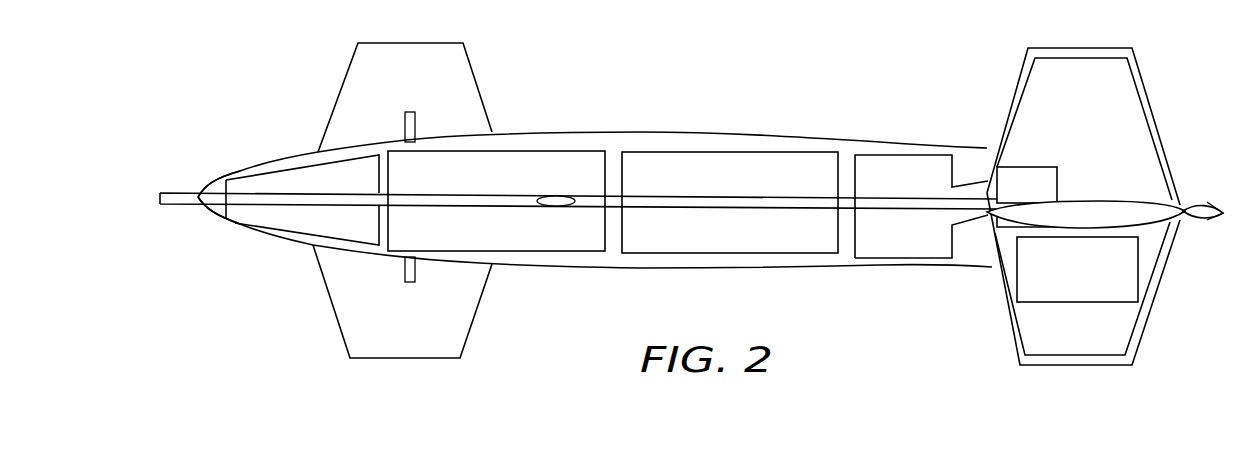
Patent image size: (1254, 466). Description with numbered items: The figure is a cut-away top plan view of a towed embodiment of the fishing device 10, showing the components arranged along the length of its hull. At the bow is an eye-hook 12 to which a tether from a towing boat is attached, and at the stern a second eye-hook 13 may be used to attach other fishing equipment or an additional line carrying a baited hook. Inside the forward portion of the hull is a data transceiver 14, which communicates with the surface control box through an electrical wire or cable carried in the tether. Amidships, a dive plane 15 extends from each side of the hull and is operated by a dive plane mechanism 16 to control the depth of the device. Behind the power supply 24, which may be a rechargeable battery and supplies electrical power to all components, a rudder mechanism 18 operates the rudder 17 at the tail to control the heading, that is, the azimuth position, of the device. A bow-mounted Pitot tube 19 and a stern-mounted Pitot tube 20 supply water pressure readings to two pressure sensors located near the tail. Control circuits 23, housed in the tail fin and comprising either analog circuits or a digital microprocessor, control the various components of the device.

The fishing device 10 is at (698, 118).
The eye-hook 12 is at (552, 197).
The second eye-hook 13 is at (1208, 218).
The data transceiver 14 is at (277, 230).
The dive plane 15 is at (397, 43).
The dive plane mechanism 16 is at (567, 151).
The rudder 17 is at (1085, 202).
The rudder mechanism 18 is at (915, 155).
The bow-mounted Pitot tube 19 is at (193, 192).
The stern-mounted Pitot tube 20 is at (1187, 200).
The control circuits 23 is at (1073, 303).
The power supply 24 is at (733, 152).